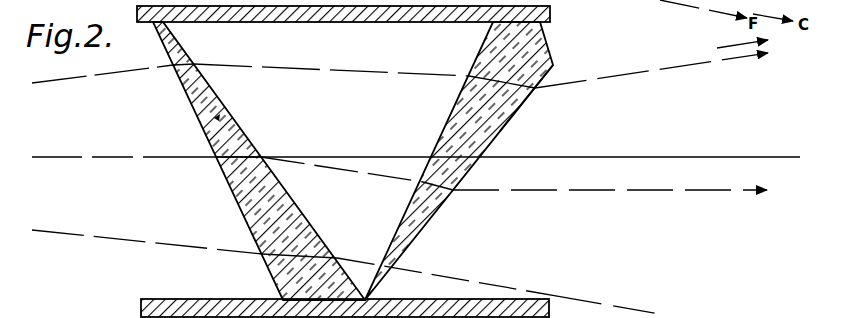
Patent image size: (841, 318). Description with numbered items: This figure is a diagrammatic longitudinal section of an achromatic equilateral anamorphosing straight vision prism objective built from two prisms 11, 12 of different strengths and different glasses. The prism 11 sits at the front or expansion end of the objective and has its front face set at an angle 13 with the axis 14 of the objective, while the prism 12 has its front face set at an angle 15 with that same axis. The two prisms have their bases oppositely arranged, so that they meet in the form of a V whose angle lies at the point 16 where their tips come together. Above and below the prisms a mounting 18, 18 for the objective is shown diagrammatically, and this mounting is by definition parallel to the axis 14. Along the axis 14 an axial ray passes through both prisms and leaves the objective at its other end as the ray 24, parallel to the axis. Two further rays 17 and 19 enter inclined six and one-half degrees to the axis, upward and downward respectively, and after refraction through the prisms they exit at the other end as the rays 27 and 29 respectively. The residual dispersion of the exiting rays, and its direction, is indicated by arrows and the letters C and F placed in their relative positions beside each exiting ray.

The prism 11 is at (459, 161).
The prism 12 is at (259, 161).
The angle 13 is at (520, 110).
The axis 14 is at (75, 155).
The angle 15 is at (202, 156).
The angle of the V 16 is at (370, 297).
The ray 17 is at (56, 79).
The mounting 18 is at (551, 18).
The ray 19 is at (83, 223).
The ray 24 is at (730, 190).
The ray 27 is at (688, 59).
The ray 29 is at (639, 304).